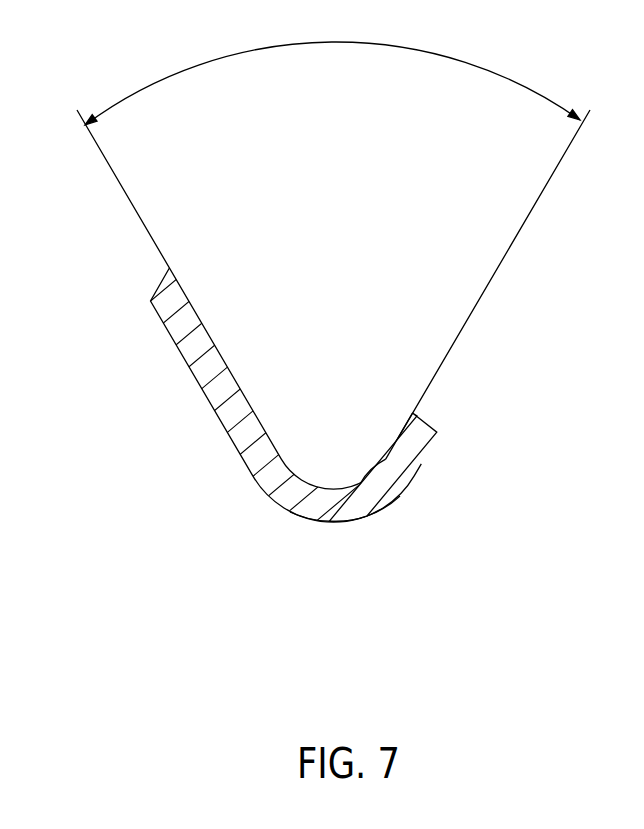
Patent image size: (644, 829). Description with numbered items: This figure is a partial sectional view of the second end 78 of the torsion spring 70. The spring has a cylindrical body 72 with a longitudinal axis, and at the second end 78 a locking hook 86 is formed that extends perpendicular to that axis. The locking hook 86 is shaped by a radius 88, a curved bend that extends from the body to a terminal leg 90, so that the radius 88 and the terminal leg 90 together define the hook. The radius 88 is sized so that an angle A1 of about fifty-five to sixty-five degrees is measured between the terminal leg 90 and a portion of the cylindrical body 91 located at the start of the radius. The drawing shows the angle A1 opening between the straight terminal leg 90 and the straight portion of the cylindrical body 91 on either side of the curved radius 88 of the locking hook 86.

The angle A1 is at (487, 72).
The torsion spring 70 is at (299, 356).
The cylindrical body 72 is at (299, 356).
The second end 78 is at (170, 448).
The locking hook 86 is at (367, 516).
The radius 88 is at (305, 523).
The terminal leg 90 is at (421, 464).
The portion of the cylindrical body 91 is at (197, 312).